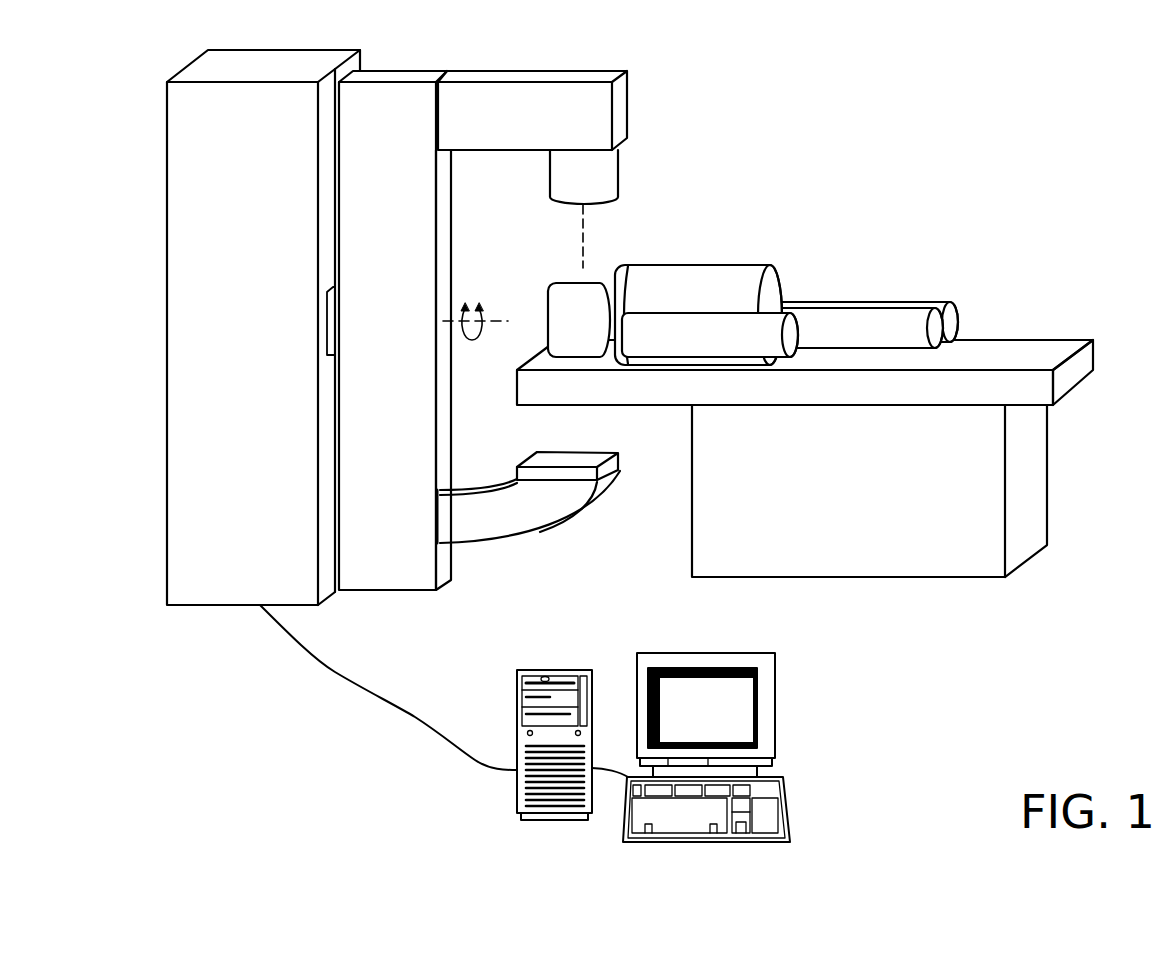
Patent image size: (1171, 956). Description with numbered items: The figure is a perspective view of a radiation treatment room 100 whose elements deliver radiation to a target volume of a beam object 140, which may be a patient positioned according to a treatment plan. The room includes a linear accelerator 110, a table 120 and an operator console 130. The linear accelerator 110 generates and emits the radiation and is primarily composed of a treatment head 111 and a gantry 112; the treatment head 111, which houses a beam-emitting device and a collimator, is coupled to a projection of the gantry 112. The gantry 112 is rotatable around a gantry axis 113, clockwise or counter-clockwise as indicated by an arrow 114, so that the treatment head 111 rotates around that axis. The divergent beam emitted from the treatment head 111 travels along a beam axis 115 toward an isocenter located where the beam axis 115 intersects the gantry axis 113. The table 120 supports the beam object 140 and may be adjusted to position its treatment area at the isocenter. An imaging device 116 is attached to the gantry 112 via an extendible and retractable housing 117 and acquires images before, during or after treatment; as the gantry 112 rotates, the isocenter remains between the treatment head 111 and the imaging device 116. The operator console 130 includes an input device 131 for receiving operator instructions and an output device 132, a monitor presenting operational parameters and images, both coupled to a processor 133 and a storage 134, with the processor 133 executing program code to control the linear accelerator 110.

The radiation treatment room 100 is at (953, 119).
The linear accelerator 110 is at (668, 195).
The treatment head 111 is at (548, 175).
The gantry 112 is at (379, 74).
The gantry axis 113 is at (482, 320).
The arrow 114 is at (472, 339).
The beam axis 115 is at (588, 253).
The imaging device 116 is at (618, 464).
The extendible and retractable housing 117 is at (597, 500).
The table 120 is at (1012, 345).
The operator console 130 is at (812, 699).
The input device 131 is at (786, 800).
The output device 132 is at (705, 653).
The processor 133 is at (543, 718).
The storage 134 is at (568, 670).
The beam object 140 is at (733, 267).